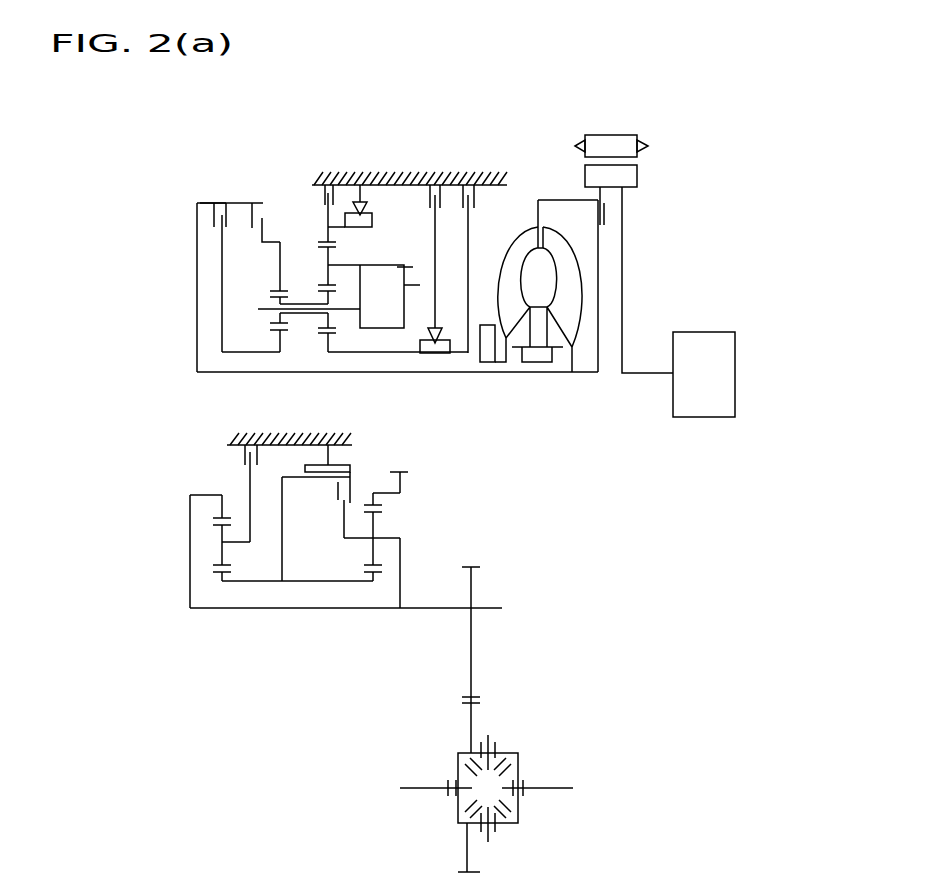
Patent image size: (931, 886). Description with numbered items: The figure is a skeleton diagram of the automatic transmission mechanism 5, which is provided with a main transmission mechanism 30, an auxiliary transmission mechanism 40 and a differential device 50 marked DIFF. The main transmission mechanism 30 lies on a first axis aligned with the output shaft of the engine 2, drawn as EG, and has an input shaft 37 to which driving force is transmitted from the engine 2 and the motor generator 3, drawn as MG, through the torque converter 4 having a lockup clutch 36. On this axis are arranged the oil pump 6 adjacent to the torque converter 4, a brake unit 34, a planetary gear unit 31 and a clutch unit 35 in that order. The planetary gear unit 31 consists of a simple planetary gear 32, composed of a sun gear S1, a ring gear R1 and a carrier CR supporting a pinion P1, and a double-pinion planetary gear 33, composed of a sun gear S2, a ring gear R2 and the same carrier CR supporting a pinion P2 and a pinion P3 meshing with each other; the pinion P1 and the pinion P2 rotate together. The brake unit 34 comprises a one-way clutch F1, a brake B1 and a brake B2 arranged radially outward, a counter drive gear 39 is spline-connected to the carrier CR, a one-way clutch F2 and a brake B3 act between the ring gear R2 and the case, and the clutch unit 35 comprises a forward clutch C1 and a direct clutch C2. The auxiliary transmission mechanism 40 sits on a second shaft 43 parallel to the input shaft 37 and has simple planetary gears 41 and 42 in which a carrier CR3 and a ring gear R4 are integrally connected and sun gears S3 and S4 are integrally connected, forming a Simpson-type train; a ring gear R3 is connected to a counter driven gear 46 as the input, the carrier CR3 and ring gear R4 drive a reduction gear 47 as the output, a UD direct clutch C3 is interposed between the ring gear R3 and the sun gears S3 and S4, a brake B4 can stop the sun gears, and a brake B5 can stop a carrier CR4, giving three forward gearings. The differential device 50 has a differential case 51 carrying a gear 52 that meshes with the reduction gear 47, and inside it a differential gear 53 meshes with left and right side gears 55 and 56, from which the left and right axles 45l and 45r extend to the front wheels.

The engine 2 is at (697, 337).
The motor generator 3 is at (633, 130).
The torque converter 4 is at (525, 208).
The automatic transmission mechanism 5 is at (377, 130).
The oil pump 6 is at (483, 325).
The main transmission mechanism 30 is at (122, 292).
The planetary gear unit 31 is at (315, 118).
The simple planetary gear 32 is at (283, 200).
The double-pinion planetary gear 33 is at (318, 222).
The brake unit 34 is at (452, 137).
The clutch unit 35 is at (197, 192).
The lockup clutch 36 is at (593, 220).
The input shaft 37 is at (478, 373).
The counter drive gear 39 is at (408, 286).
The auxiliary transmission mechanism 40 is at (100, 538).
The simple planetary gear 41 is at (400, 503).
The simple planetary gear 42 is at (192, 492).
The second shaft 43 is at (347, 610).
The counter driven gear 46 is at (403, 470).
The reduction gear 47 is at (472, 587).
The differential device 50 is at (542, 742).
The differential case 51 is at (512, 823).
The gear 52 is at (470, 717).
The differential gear 53 is at (493, 805).
The left side gear 55 is at (460, 783).
The right side gear 56 is at (520, 780).
The left axle 45l is at (420, 793).
The right axle 45r is at (558, 793).
The forward clutch C1 is at (264, 208).
The direct clutch C2 is at (220, 263).
The UD direct clutch C3 is at (316, 526).
The brake B1 is at (472, 249).
The brake B2 is at (432, 236).
The brake B3 is at (329, 175).
The brake B4 is at (327, 439).
The brake B5 is at (289, 474).
The one-way clutch F1 is at (440, 325).
The one-way clutch F2 is at (361, 186).
The ring gear R1 is at (278, 286).
The ring gear R2 is at (332, 242).
The ring gear R3 is at (362, 493).
The ring gear R4 is at (220, 517).
The pinion P1 is at (270, 300).
The pinion P2 is at (328, 265).
The pinion P3 is at (318, 243).
The sun gear S1 is at (277, 338).
The sun gear S2 is at (327, 347).
The sun gear S3 is at (383, 568).
The sun gear S4 is at (220, 582).
The carrier CR is at (370, 291).
The carrier CR3 is at (400, 558).
The carrier CR4 is at (220, 537).
The differential DIFF is at (450, 776).
The motor/generator MG is at (611, 146).
The engine EG is at (704, 374).